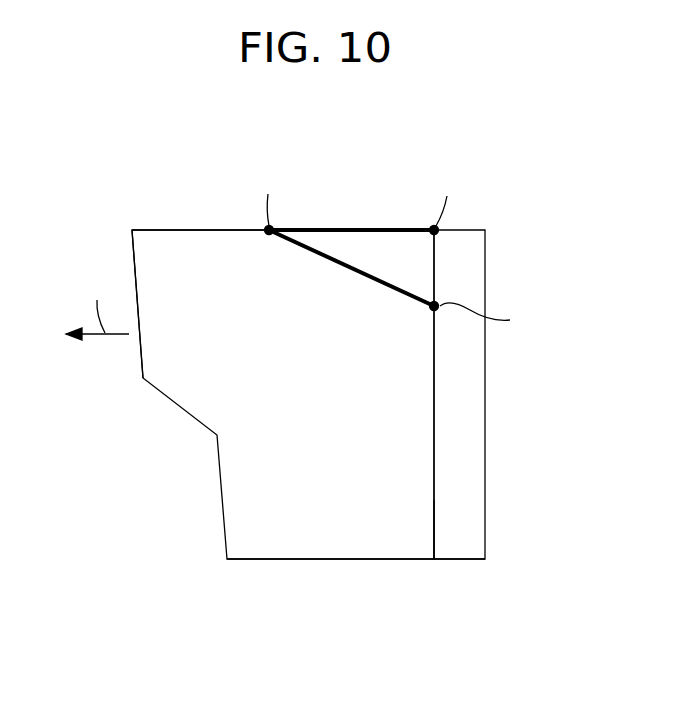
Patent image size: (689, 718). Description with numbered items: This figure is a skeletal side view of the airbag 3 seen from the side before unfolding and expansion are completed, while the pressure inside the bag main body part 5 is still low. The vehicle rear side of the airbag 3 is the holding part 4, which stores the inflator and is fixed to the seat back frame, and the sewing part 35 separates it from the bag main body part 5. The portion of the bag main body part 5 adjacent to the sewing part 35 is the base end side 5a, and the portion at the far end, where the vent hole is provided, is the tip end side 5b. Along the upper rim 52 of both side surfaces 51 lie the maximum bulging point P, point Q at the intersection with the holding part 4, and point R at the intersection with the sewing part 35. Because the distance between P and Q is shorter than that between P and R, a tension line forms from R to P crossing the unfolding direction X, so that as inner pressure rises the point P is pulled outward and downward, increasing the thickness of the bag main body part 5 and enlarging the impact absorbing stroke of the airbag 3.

The airbag 3 is at (411, 178).
The holding part 4 is at (466, 432).
The bag main body part 5 is at (218, 470).
The base end side 5a is at (422, 365).
The tip end side 5b is at (140, 243).
The sewing part 35 is at (432, 532).
The side surfaces 51 is at (304, 540).
The upper rim 52 is at (180, 229).